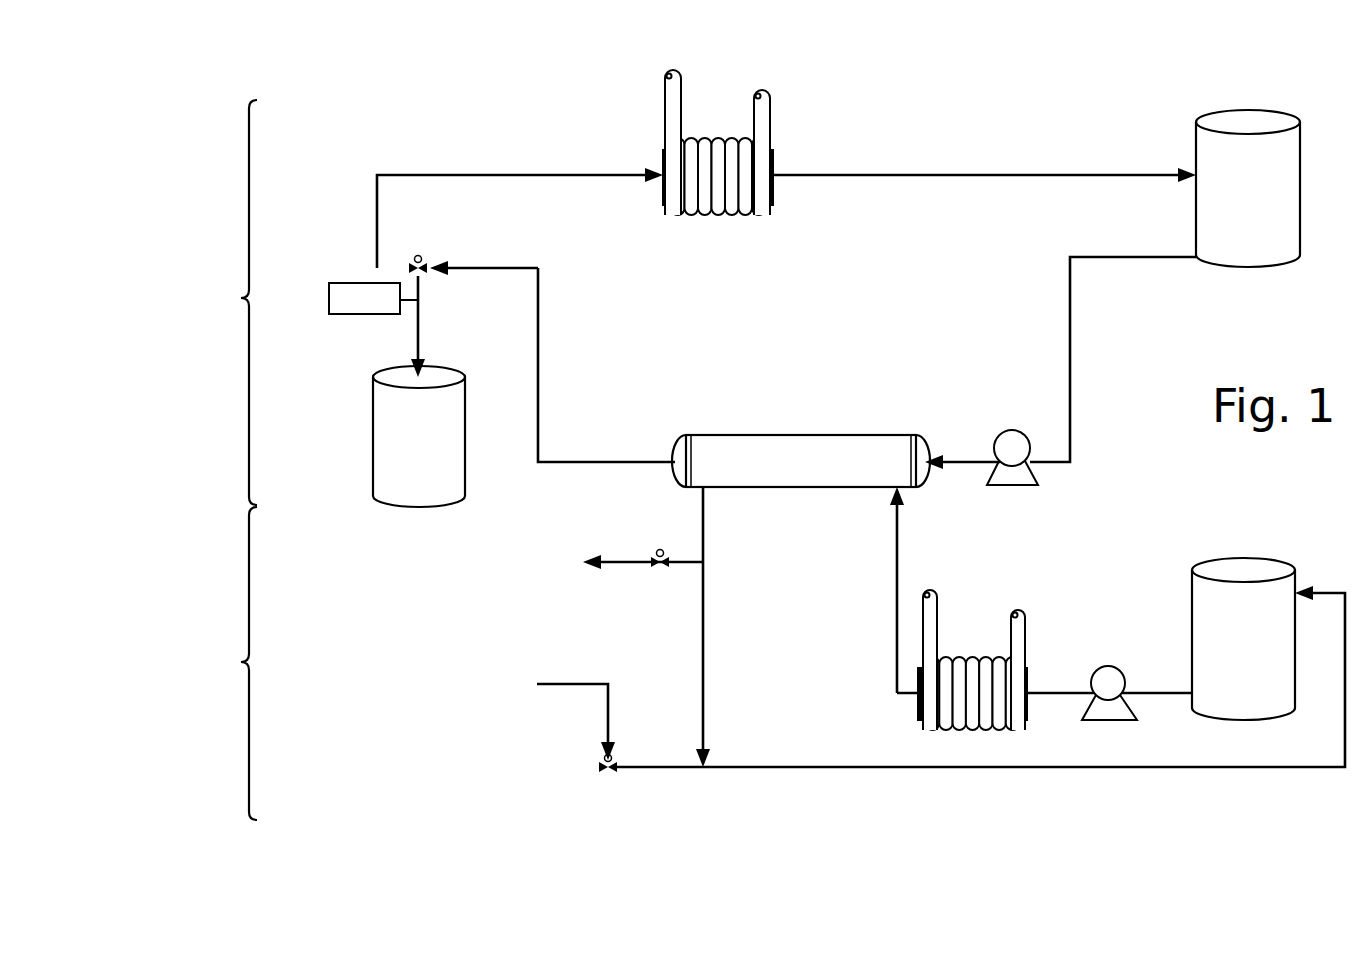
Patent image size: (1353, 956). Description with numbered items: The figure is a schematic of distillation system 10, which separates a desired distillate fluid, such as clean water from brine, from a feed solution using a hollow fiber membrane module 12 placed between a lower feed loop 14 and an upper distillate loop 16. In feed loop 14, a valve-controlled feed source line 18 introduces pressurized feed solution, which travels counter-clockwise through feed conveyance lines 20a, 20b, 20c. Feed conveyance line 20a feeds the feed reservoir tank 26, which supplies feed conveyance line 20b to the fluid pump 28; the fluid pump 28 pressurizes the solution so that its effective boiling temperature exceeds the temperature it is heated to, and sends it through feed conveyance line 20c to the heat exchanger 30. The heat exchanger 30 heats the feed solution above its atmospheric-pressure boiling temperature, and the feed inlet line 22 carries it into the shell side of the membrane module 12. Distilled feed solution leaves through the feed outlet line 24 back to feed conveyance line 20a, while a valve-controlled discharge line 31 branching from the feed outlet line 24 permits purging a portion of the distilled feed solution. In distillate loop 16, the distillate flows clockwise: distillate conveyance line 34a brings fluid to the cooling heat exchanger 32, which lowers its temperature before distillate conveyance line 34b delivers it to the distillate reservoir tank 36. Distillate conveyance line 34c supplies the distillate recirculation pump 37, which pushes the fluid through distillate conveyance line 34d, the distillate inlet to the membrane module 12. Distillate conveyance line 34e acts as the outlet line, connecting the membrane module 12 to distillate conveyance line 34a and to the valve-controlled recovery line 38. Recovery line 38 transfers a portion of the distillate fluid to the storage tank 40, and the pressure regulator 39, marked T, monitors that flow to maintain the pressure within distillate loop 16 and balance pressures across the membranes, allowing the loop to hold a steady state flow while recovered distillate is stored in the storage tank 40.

The distillation system 10 is at (424, 100).
The membrane module 12 is at (866, 445).
The feed loop 14 is at (233, 663).
The distillate loop 16 is at (233, 302).
The feed source line 18 is at (586, 684).
The feed conveyance line 20a is at (930, 768).
The feed conveyance line 20b is at (1168, 692).
The feed conveyance line 20c is at (1048, 692).
The feed inlet line 22 is at (897, 606).
The feed outlet line 24 is at (702, 709).
The feed reservoir tank 26 is at (1252, 565).
The fluid pump 28 is at (1100, 713).
The heat exchanger 30 is at (927, 698).
The discharge line 31 is at (636, 562).
The heat exchanger 32 is at (770, 150).
The distillate conveyance line 34a is at (471, 175).
The distillate conveyance line 34b is at (938, 173).
The distillate conveyance line 34c is at (1108, 262).
The distillate conveyance line 34d is at (962, 460).
The distillate conveyance line 34e is at (508, 268).
The distillate reservoir tank 36 is at (1245, 118).
The distillate recirculation pump 37 is at (1010, 480).
The recovery line 38 is at (419, 320).
The pressure regulator 39 is at (352, 314).
The storage tank 40 is at (387, 434).